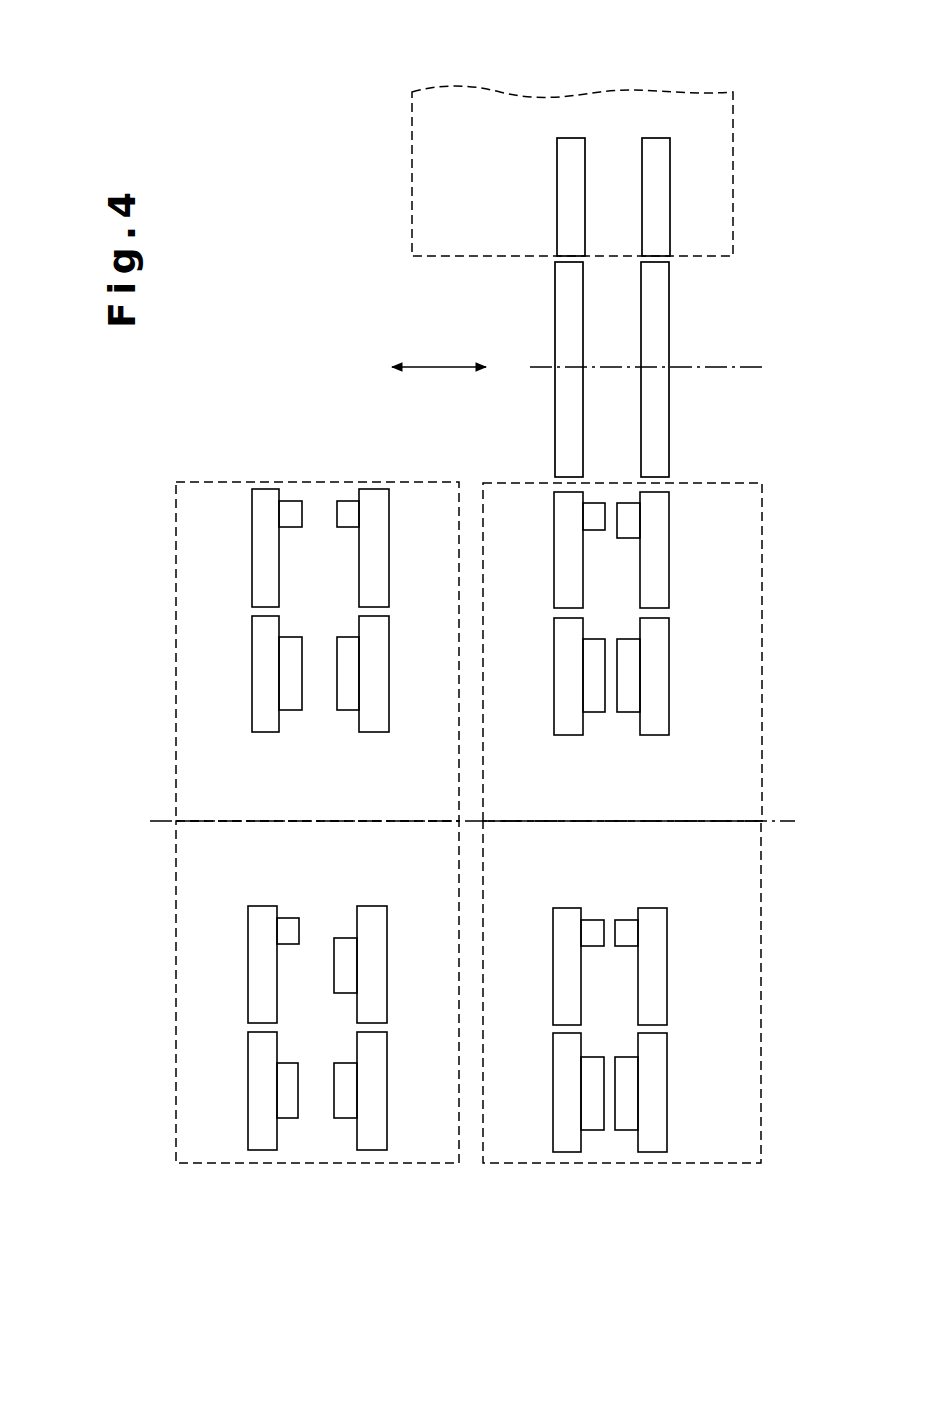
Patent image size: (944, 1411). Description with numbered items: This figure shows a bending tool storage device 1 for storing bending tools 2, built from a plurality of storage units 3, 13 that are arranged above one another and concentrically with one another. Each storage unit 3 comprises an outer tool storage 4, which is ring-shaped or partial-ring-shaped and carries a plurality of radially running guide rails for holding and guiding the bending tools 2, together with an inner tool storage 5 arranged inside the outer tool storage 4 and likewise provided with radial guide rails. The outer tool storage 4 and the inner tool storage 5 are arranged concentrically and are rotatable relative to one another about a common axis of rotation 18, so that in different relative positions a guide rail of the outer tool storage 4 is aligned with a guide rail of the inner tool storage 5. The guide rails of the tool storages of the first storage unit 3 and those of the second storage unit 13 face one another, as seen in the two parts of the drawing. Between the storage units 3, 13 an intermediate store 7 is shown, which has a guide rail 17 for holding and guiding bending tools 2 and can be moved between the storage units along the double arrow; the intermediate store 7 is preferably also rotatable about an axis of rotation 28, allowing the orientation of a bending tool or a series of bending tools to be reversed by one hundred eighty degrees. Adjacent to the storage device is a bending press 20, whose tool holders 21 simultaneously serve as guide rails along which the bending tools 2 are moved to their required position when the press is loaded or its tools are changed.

The bending tool storage device 1 is at (150, 1130).
The bending tools 2 is at (594, 713).
The storage unit 3 is at (573, 1166).
The outer tool storage 4 is at (670, 555).
The inner tool storage 5 is at (669, 682).
The intermediate store 7 is at (669, 425).
The storage unit 13 is at (268, 1166).
The guide rail 17 is at (583, 290).
The axis of rotation 18 is at (670, 822).
The bending press 20 is at (700, 208).
The tool holders 21 is at (590, 163).
The axis of rotation 28 is at (538, 368).